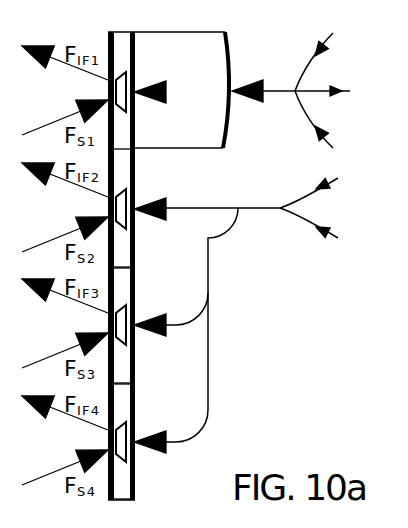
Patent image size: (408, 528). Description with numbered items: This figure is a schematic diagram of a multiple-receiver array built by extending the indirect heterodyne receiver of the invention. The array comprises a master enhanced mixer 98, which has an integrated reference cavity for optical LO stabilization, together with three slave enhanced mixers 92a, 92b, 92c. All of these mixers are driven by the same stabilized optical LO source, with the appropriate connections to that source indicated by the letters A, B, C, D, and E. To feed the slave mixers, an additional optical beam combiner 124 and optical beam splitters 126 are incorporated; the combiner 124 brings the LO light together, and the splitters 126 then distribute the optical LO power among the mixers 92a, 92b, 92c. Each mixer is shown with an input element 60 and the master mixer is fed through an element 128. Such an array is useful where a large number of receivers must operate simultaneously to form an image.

The grating coupler 60 is at (92, 92).
The master enhanced mixer 98 is at (171, 137).
The slave enhanced mixer 92a is at (123, 236).
The slave enhanced mixer 92b is at (123, 352).
The slave enhanced mixer 92c is at (123, 469).
The optical beam combiner 124 is at (284, 220).
The optical beam splitters 126 is at (235, 229).
The optical combiner 128 is at (294, 76).